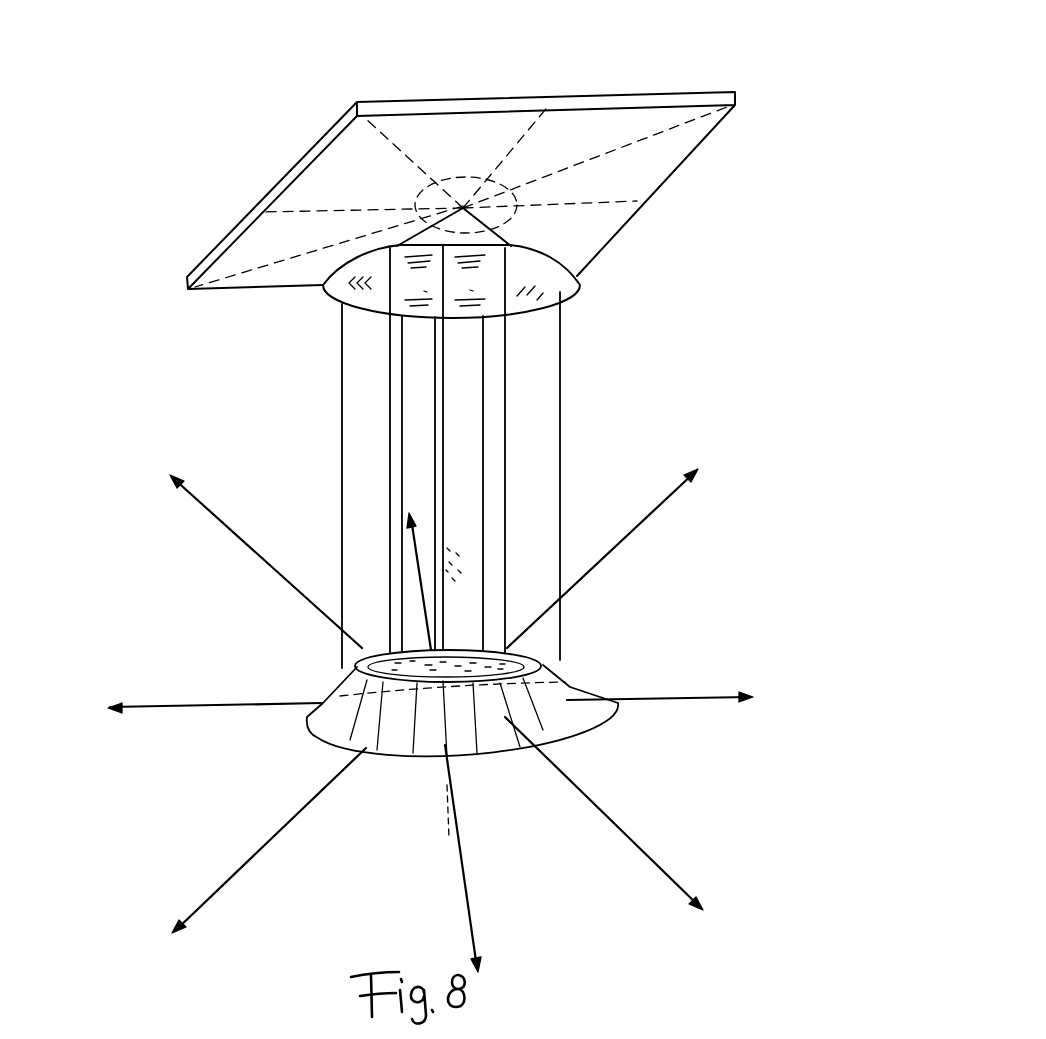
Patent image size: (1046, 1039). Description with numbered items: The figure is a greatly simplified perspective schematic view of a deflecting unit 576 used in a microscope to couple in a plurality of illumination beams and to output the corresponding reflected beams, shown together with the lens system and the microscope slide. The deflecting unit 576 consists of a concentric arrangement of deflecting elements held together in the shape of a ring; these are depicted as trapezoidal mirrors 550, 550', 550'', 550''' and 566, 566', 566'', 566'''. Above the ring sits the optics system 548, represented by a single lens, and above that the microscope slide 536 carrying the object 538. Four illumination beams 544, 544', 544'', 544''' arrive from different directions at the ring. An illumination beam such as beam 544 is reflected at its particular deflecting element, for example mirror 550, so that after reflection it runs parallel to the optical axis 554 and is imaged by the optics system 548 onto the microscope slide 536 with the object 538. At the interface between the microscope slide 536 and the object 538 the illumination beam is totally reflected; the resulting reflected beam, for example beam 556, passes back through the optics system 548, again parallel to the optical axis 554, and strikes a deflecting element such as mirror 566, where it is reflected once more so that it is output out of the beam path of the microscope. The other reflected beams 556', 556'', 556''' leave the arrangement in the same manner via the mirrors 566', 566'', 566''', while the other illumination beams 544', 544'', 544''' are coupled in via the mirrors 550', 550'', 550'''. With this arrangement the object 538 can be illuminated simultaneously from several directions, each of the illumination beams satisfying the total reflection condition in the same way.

The microscope slide 536 is at (610, 100).
The object 538 is at (459, 198).
The optics system 548 is at (580, 284).
The deflecting unit 576 is at (357, 657).
The deflecting element 550 is at (410, 725).
The deflecting element 550' is at (390, 779).
The deflecting element 550'' is at (504, 786).
The deflecting element 550''' is at (582, 764).
The illumination beam 544 is at (430, 663).
The illumination beam 544' is at (248, 840).
The illumination beam 544'' is at (519, 858).
The illumination beam 544''' is at (638, 813).
The optical axis 554 is at (455, 853).
The reflected beam 556 is at (688, 651).
The reflected beam 556' is at (602, 543).
The reflected beam 556'' is at (335, 512).
The reflected beam 556''' is at (241, 522).
The deflecting element 566 is at (663, 737).
The deflecting element 566' is at (592, 635).
The deflecting element 566'' is at (559, 523).
The deflecting element 566''' is at (362, 581).